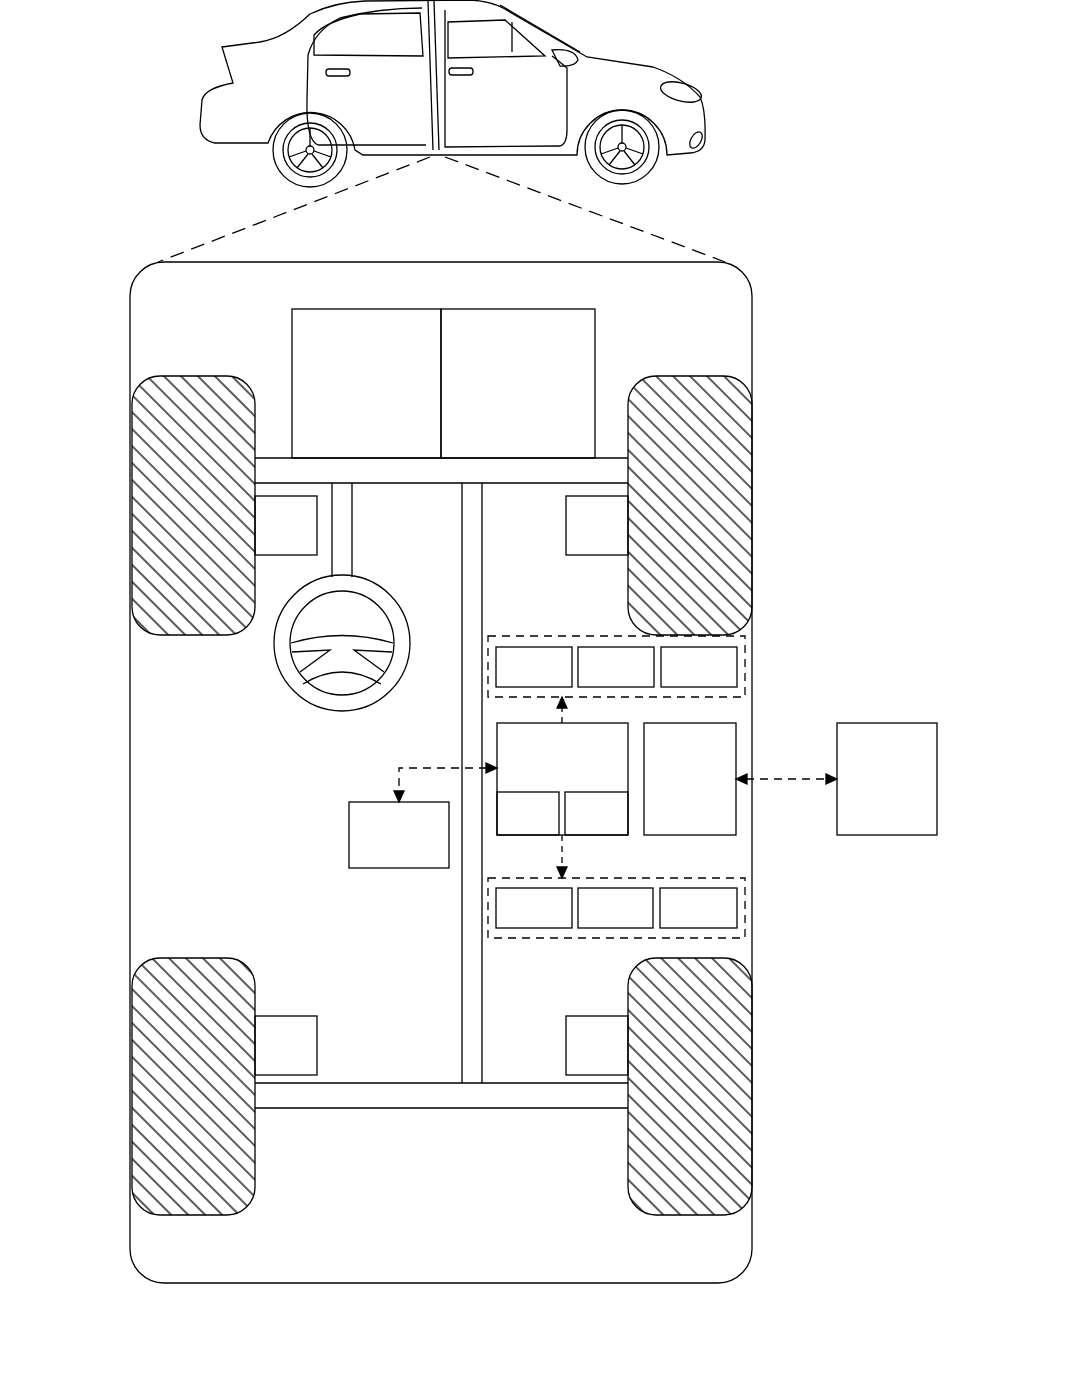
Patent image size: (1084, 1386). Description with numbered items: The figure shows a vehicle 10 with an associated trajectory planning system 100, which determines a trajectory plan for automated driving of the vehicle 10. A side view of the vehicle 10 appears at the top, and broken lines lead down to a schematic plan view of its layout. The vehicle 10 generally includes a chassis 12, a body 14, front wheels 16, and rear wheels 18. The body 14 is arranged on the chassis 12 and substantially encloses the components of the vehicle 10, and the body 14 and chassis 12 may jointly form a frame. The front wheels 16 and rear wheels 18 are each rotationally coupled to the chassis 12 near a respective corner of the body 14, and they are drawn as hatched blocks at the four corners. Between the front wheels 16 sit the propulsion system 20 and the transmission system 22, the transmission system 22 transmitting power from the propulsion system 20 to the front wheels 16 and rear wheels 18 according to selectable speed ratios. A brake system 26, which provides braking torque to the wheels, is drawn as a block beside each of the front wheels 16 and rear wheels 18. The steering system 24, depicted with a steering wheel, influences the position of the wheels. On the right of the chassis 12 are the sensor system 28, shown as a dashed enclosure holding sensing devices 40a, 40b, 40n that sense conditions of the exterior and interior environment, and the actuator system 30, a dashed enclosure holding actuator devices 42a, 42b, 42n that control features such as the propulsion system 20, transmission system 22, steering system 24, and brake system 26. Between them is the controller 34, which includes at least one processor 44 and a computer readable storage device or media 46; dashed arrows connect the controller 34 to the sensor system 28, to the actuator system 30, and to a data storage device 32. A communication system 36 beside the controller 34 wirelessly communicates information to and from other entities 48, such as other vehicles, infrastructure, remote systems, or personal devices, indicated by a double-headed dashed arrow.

The vehicle 10 is at (210, 82).
The trajectory planning system 100 is at (782, 276).
The chassis 12 is at (462, 950).
The body 14 is at (130, 733).
The front wheels 16 is at (191, 376).
The rear wheels 18 is at (192, 1216).
The propulsion system 20 is at (352, 400).
The transmission system 22 is at (498, 400).
The steering system 24 is at (367, 555).
The brake system 26 is at (271, 538).
The sensor system 28 is at (577, 636).
The actuator system 30 is at (581, 940).
The data storage device 32 is at (384, 850).
The controller 34 is at (547, 775).
The communication system 36 is at (675, 795).
The sensing device 40a is at (512, 680).
The sensing device 40b is at (595, 680).
The sensing device 40n is at (678, 680).
The actuator device 42a is at (512, 922).
The actuator device 42b is at (595, 922).
The actuator device 42n is at (678, 922).
The processor 44 is at (513, 827).
The computer readable storage device or media 46 is at (582, 827).
The other entities 48 is at (872, 790).